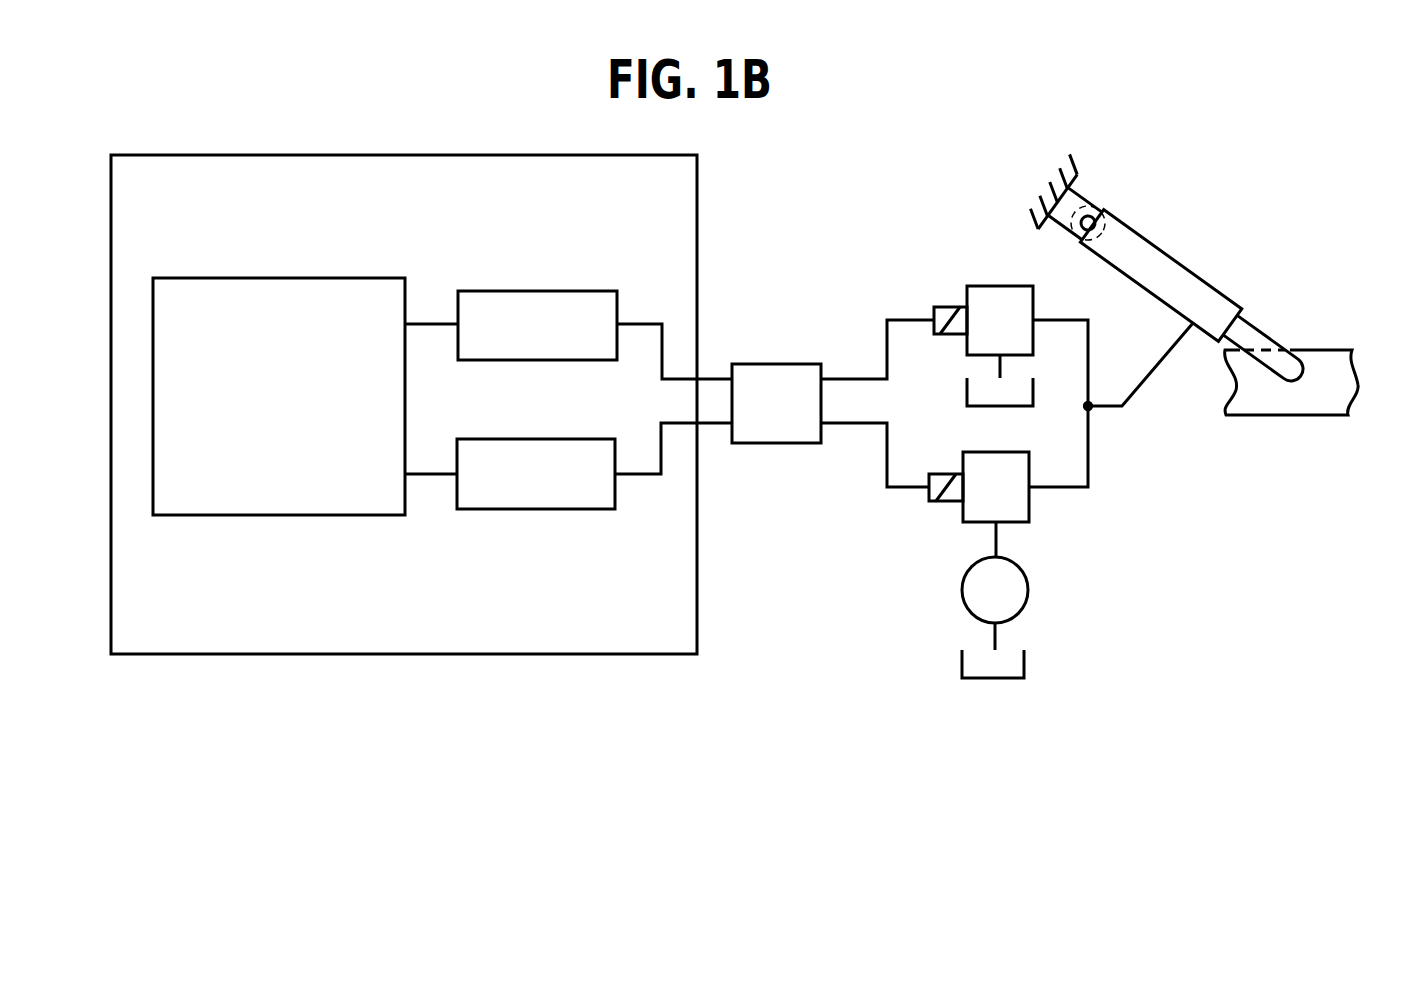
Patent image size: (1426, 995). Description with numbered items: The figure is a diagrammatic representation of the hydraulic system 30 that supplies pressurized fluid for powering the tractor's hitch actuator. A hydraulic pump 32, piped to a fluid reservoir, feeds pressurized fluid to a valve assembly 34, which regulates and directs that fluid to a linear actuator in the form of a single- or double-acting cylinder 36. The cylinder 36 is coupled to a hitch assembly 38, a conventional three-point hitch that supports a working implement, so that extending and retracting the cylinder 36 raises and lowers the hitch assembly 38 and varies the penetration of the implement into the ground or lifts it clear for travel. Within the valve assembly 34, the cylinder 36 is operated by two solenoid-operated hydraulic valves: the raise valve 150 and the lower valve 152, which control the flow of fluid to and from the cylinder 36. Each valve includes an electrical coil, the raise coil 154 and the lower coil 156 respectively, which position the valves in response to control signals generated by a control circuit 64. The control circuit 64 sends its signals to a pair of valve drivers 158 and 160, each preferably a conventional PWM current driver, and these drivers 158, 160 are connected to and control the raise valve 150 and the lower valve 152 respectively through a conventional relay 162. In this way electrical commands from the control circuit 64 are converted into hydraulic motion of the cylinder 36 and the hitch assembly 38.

The hydraulic system 30 is at (1176, 278).
The hydraulic pump 32 is at (962, 588).
The valve assembly 34 is at (1193, 506).
The cylinder 36 is at (1223, 248).
The hitch assembly 38 is at (1342, 349).
The control circuit 64 is at (300, 416).
The raise valve 150 is at (983, 286).
The lower valve 152 is at (1012, 522).
The raise coil 154 is at (940, 307).
The lower coil 156 is at (950, 505).
The valve driver 158 is at (590, 291).
The valve driver 160 is at (573, 509).
The relay 162 is at (792, 416).